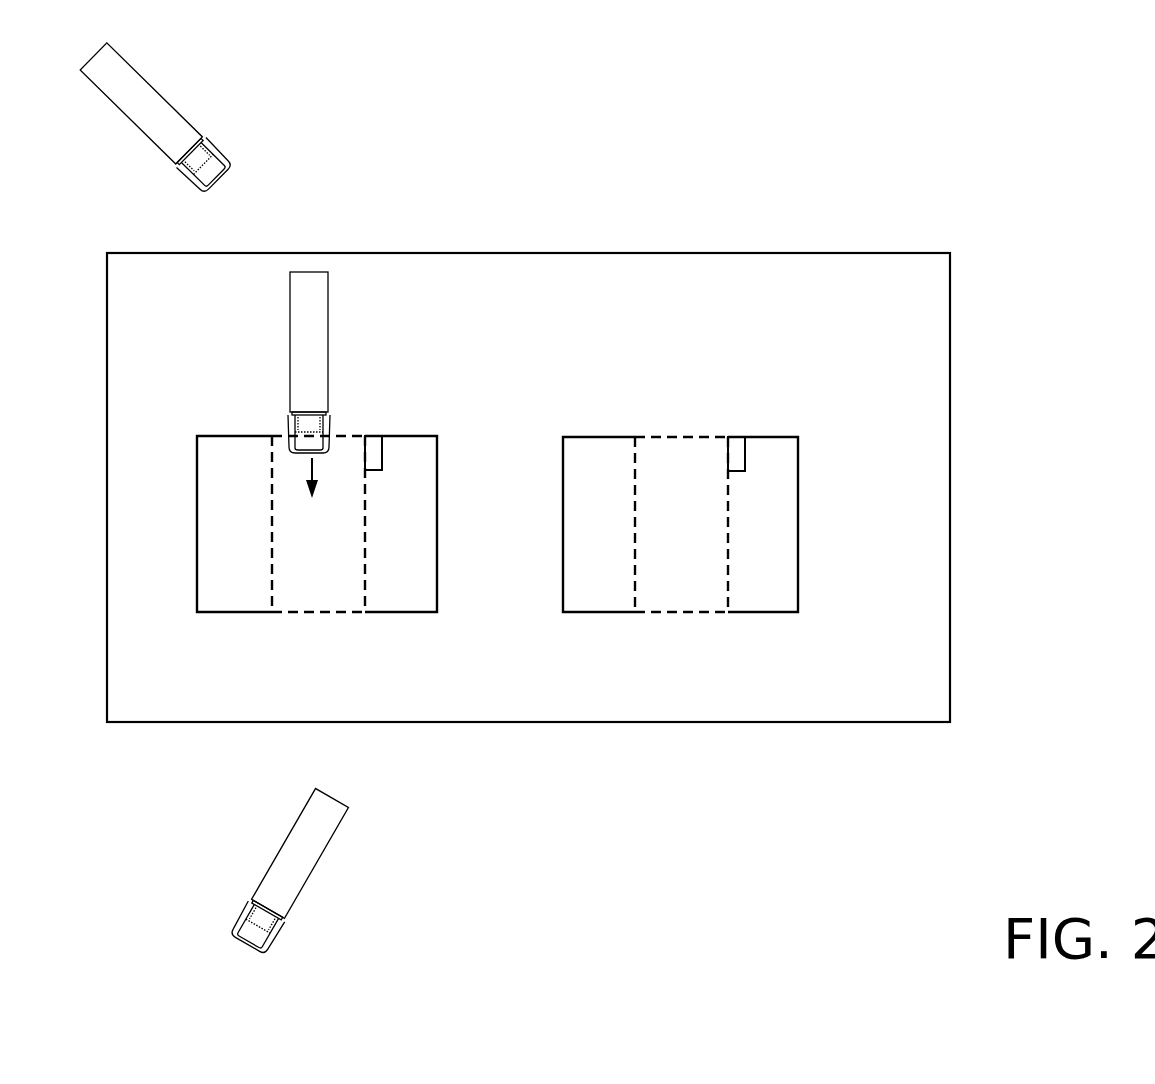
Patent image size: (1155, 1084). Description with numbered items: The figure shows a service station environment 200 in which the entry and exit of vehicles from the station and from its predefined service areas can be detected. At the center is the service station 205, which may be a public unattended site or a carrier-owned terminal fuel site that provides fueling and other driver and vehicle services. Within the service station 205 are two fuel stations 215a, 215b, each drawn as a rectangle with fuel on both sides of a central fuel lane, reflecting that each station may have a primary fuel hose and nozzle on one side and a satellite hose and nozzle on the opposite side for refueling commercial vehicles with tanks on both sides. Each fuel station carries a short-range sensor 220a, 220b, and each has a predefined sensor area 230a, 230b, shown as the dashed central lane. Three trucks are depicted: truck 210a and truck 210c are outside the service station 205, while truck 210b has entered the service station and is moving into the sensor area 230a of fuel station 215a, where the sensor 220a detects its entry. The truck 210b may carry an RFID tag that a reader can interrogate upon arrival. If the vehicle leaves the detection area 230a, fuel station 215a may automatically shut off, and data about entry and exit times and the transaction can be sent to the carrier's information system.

The service station environment 200 is at (878, 132).
The service station 205 is at (652, 307).
The truck 210a is at (132, 65).
The truck 210b is at (330, 348).
The truck 210c is at (297, 825).
The fuel station 215a is at (361, 534).
The fuel station 215b is at (725, 530).
The short-range sensor 220a is at (373, 442).
The short-range sensor 220b is at (738, 438).
The sensor area 230a is at (323, 602).
The sensor area 230b is at (688, 593).